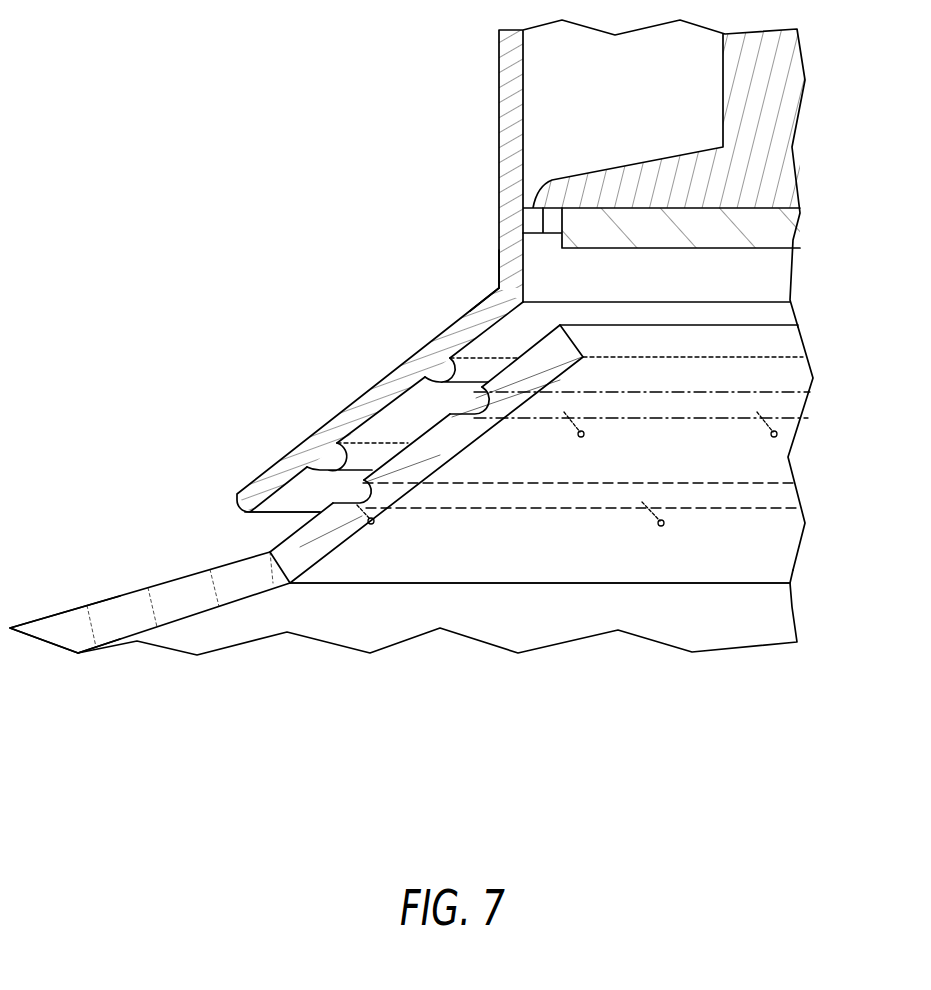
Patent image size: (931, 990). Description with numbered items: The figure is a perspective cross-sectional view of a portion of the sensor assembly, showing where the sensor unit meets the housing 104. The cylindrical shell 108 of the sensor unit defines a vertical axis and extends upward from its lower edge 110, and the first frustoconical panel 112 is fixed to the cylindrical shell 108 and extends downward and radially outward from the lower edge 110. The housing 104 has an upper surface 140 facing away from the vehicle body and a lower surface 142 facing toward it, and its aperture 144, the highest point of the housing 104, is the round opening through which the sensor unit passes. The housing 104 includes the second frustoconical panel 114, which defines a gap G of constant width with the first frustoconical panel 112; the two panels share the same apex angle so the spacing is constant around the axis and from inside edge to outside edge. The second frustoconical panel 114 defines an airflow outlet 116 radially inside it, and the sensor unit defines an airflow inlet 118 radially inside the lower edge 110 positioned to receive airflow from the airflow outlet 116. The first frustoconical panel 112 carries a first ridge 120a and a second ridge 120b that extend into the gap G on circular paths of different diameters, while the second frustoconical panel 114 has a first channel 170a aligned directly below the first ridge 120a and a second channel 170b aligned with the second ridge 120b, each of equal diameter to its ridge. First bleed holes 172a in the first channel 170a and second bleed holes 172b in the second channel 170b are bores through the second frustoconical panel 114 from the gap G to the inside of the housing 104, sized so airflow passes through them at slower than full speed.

The housing 104 is at (112, 615).
The cylindrical shell 108 is at (499, 82).
The lower edge 110 is at (497, 290).
The first frustoconical panel 112 is at (367, 398).
The second frustoconical panel 114 is at (373, 560).
The airflow outlet 116 is at (778, 345).
The airflow inlet 118 is at (780, 272).
The first ridge 120a is at (480, 370).
The second ridge 120b is at (365, 457).
The upper surface 140 is at (160, 583).
The lower surface 142 is at (188, 615).
The aperture 144 is at (570, 583).
The first channel 170a is at (450, 382).
The second channel 170b is at (355, 498).
The first bleed holes 172a is at (812, 457).
The second bleed holes 172b is at (698, 547).
The gap G is at (270, 528).